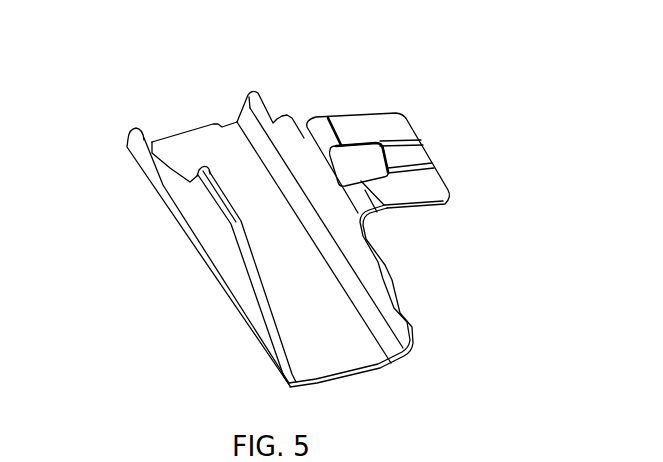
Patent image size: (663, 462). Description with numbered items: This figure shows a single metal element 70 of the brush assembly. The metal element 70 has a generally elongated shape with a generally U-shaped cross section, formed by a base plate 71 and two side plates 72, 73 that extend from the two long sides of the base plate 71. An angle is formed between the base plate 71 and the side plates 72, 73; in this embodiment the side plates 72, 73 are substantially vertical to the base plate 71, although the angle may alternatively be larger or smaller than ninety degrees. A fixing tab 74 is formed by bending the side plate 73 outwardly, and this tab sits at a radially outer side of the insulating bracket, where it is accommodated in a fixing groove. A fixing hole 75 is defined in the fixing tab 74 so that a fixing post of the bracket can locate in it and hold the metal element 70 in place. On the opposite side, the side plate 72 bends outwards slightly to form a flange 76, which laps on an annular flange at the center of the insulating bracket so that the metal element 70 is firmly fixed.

The metal element 70 is at (488, 145).
The base plate 71 is at (203, 140).
The side plate 72 is at (173, 192).
The side plate 73 is at (287, 143).
The fixing tab 74 is at (361, 132).
The fixing hole 75 is at (359, 167).
The flange 76 is at (220, 217).